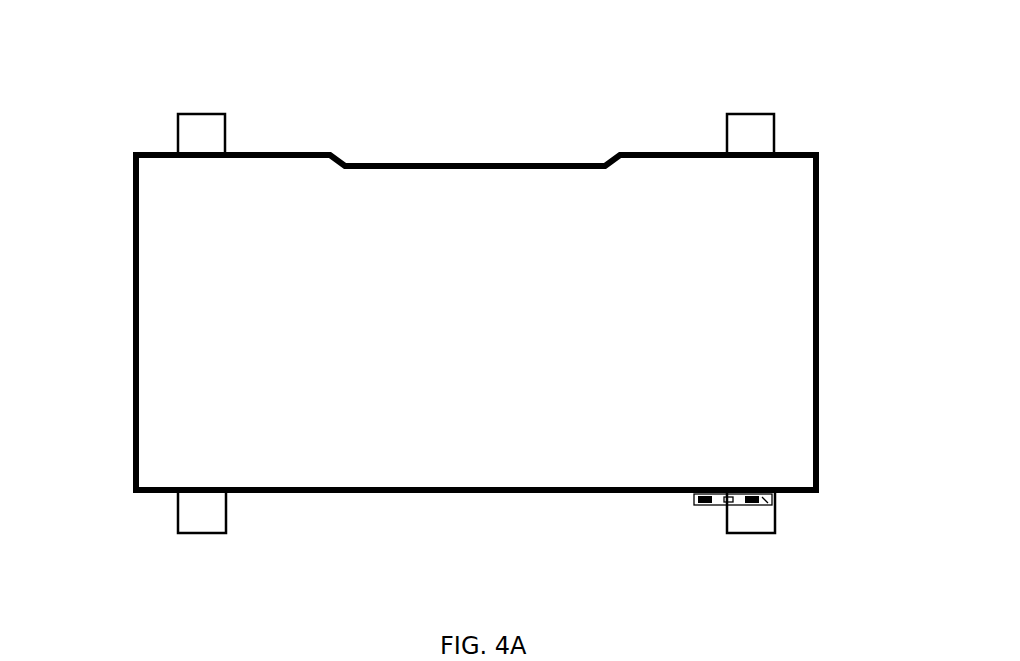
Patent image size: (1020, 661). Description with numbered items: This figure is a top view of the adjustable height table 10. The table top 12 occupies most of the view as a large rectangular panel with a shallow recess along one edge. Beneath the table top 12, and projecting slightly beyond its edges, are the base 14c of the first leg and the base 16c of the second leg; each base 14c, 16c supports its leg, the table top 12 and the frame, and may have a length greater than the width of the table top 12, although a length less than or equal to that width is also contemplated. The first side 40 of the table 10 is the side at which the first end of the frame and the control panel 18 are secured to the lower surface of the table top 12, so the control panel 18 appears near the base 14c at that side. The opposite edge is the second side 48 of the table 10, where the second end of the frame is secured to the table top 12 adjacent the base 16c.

The table 10 is at (472, 273).
The table top 12 is at (785, 425).
The base 14c is at (767, 128).
The base 16c is at (188, 125).
The control panel 18 is at (765, 500).
The first side 40 is at (840, 283).
The second side 48 is at (99, 300).